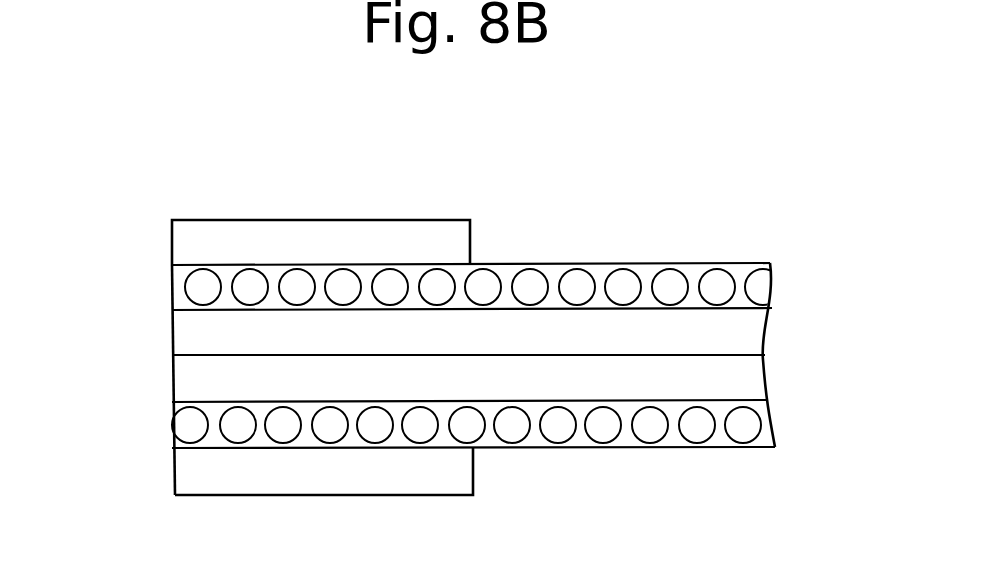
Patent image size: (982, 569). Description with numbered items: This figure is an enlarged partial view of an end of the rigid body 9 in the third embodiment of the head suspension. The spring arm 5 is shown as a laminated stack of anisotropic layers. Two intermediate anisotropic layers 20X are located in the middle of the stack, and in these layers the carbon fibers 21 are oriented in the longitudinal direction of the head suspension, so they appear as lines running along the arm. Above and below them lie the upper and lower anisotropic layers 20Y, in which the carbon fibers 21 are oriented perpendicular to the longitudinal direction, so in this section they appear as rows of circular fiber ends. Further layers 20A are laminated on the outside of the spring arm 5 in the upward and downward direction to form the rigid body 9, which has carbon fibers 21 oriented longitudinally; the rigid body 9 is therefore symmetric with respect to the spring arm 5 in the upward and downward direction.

The spring arm 5 is at (672, 465).
The rigid body 9 is at (312, 214).
The sheet layer 20A is at (435, 218).
The intermediate anisotropic layers 20X is at (200, 243).
The upper and lower anisotropic layers 20Y is at (723, 412).
The carbon fibers 21 is at (575, 283).